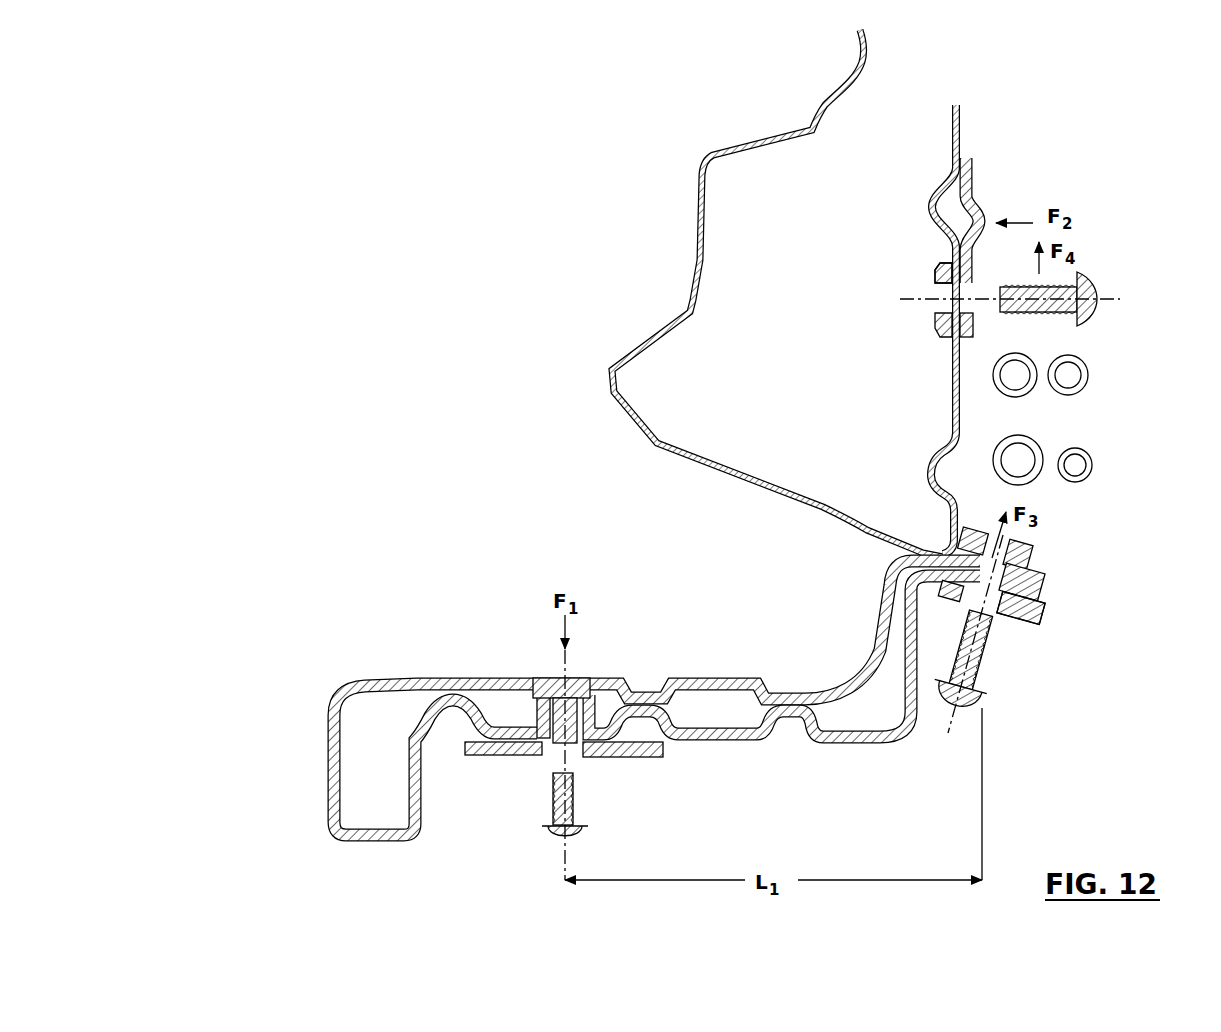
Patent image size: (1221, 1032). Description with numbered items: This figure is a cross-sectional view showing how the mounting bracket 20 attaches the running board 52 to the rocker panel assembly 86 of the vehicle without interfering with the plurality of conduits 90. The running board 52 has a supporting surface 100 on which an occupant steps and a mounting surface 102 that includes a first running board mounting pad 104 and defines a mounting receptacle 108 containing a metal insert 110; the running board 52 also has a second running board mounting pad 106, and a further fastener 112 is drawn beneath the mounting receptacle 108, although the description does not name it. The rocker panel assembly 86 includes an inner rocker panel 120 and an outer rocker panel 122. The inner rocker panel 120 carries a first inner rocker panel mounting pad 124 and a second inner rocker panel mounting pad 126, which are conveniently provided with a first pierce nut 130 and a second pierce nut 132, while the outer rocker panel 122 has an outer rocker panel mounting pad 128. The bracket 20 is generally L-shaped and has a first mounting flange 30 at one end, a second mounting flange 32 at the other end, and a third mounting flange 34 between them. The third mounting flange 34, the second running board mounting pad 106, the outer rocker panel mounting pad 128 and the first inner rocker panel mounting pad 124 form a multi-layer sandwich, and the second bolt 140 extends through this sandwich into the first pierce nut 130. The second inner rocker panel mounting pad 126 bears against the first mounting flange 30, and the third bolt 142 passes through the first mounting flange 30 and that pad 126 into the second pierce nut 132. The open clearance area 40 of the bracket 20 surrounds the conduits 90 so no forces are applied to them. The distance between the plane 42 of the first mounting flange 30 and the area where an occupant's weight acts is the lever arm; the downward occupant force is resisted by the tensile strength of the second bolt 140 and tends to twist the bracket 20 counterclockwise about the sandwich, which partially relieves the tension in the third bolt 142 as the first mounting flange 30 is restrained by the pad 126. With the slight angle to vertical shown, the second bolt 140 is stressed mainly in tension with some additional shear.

The mounting bracket 20 is at (974, 166).
The first mounting flange 30 is at (976, 190).
The second mounting flange 32 is at (620, 758).
The third mounting flange 34 is at (1032, 621).
The open clearance area 40 is at (1052, 423).
The plane of the first mounting flange 42 is at (984, 790).
The running board 52 is at (333, 745).
The rocker panel assembly 86 is at (846, 55).
The conduits 90 is at (1090, 370).
The supporting surface 100 is at (640, 679).
The mounting surface 102 is at (720, 743).
The first running board mounting pad 104 is at (515, 756).
The second running board mounting pad 106 is at (1045, 603).
The mounting receptacle 108 is at (544, 700).
The metal insert 110 is at (578, 695).
The bolt 112 is at (562, 839).
The inner rocker panel 120 is at (961, 115).
The outer rocker panel 122 is at (698, 212).
The first inner rocker panel mounting pad 124 is at (1045, 578).
The second inner rocker panel mounting pad 126 is at (950, 240).
The outer rocker panel mounting pad 128 is at (940, 545).
The first pierce nut 130 is at (1033, 548).
The second pierce nut 132 is at (935, 272).
The second bolt 140 is at (986, 700).
The third bolt 142 is at (1080, 284).